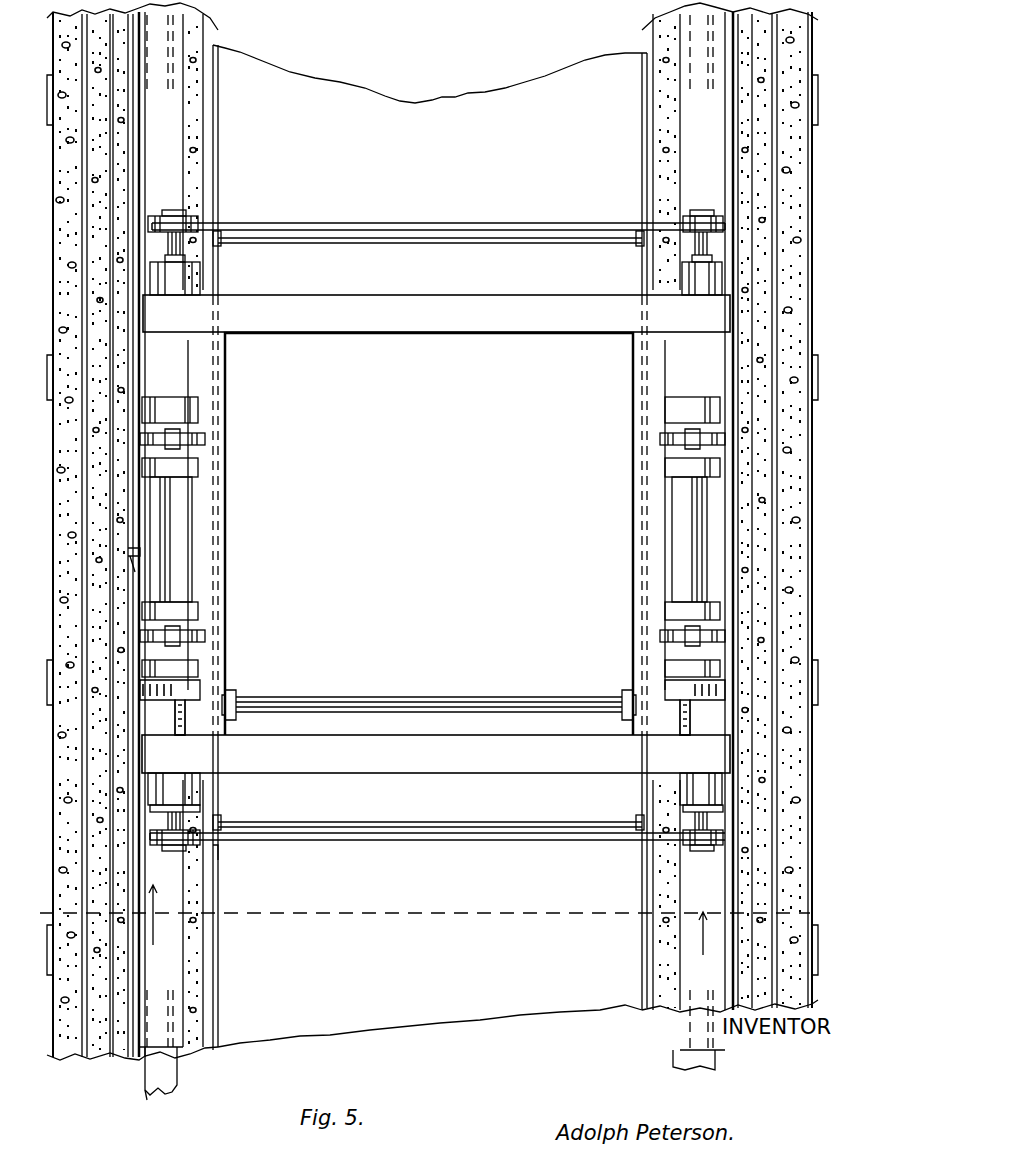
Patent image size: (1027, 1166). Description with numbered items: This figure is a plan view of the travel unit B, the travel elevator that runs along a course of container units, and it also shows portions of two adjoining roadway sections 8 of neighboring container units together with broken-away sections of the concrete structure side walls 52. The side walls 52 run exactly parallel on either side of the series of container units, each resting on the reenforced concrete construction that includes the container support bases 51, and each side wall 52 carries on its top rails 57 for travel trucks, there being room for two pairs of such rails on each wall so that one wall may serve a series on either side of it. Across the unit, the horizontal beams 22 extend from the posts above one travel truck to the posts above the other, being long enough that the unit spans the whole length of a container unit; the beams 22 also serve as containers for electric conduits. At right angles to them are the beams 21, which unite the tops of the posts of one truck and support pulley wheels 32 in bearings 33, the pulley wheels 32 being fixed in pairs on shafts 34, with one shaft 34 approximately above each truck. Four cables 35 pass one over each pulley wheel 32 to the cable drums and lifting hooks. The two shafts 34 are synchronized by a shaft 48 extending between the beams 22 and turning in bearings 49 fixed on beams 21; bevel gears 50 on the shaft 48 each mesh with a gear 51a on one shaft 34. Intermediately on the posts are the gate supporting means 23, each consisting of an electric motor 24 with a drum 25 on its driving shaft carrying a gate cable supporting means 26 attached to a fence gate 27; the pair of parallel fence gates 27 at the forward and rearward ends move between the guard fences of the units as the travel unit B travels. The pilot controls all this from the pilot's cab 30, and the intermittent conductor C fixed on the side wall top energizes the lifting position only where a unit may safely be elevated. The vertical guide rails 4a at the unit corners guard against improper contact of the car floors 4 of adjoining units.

The car floor 4 is at (425, 922).
The guide rail 4a is at (248, 226).
The roadway section 8 is at (404, 108).
The horizontal beam 21 is at (233, 478).
The beam 22 is at (475, 333).
The gate supporting means 23 is at (170, 240).
The electric motor 24 is at (175, 280).
The drum 25 is at (165, 215).
The gate cable supporting means 26 is at (220, 850).
The fence gate 27 is at (400, 225).
The pilot's cab 30 is at (655, 1012).
The pulley wheel 32 is at (170, 430).
The bearing 33 is at (175, 410).
The shaft 34 is at (168, 530).
The cable 35 is at (175, 440).
The shaft 48 is at (375, 695).
The bearing 49 is at (232, 712).
The bevel gear 50 is at (178, 718).
The support base 51 is at (152, 1097).
The gear 51a is at (202, 686).
The side wall 52 is at (188, 1062).
The rail 57 is at (80, 1062).
The travel unit B is at (380, 330).
The intermittent conductor C is at (138, 556).